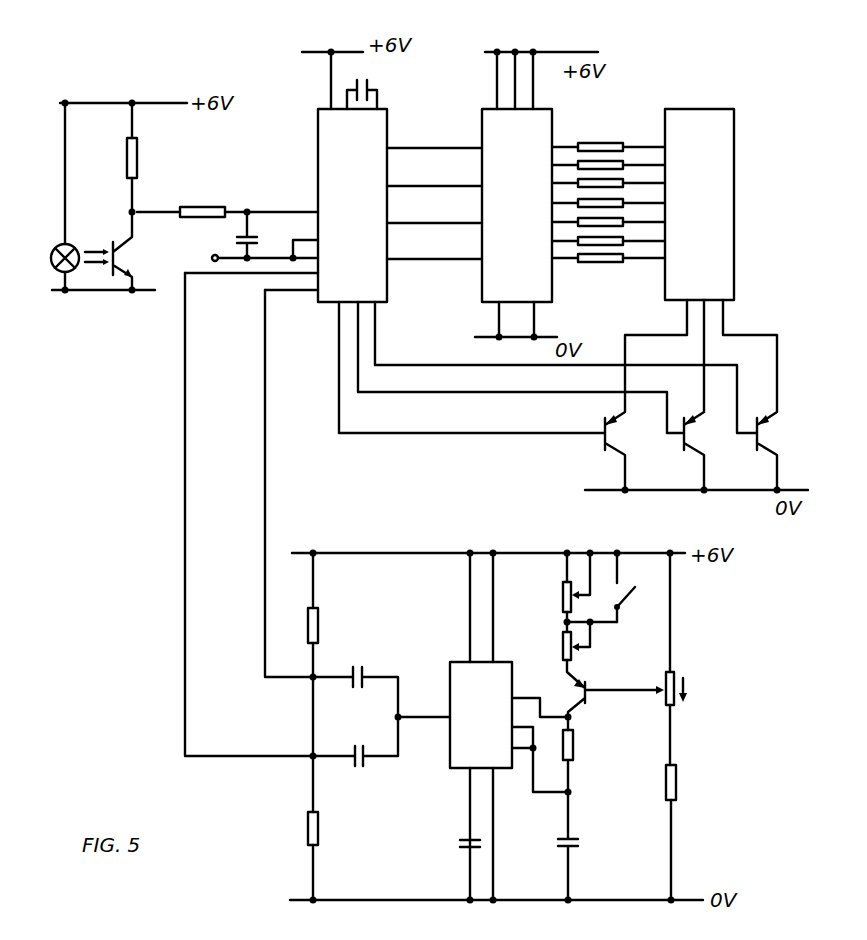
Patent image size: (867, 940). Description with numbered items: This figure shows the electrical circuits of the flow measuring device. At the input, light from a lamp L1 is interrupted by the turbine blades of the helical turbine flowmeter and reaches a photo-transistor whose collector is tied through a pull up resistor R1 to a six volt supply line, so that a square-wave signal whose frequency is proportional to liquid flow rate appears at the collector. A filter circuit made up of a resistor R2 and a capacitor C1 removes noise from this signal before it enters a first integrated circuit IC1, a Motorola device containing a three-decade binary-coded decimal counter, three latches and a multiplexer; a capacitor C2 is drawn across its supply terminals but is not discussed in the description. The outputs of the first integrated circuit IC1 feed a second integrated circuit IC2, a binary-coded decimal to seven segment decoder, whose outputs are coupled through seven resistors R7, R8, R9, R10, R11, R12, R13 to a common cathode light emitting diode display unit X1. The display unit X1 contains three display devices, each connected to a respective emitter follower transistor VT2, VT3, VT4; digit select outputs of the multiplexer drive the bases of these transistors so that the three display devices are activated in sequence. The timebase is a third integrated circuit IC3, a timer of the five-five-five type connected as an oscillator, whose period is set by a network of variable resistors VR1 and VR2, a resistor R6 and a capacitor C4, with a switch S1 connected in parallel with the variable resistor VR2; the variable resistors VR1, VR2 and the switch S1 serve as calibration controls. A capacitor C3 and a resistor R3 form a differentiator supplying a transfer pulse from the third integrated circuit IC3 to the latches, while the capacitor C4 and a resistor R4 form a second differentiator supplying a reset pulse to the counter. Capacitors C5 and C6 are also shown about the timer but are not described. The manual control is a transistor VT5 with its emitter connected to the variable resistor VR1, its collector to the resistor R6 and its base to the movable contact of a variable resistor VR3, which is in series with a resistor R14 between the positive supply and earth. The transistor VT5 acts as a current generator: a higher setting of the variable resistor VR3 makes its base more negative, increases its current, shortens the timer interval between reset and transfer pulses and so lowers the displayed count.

The lamp L1 is at (80, 196).
The pull up resistor R1 is at (149, 157).
The resistor R2 is at (227, 197).
The capacitor C1 is at (232, 235).
The capacitor C2 is at (374, 86).
The first integrated circuit IC1 is at (352, 205).
The second integrated circuit IC2 is at (517, 205).
The common cathode light emitting diode display unit X1 is at (699, 204).
The resistor R7 is at (608, 133).
The resistor R8 is at (624, 164).
The resistor R9 is at (624, 183).
The resistor R10 is at (578, 217).
The resistor R11 is at (625, 244).
The resistor R12 is at (625, 227).
The resistor R13 is at (600, 262).
The emitter follower transistor VT2 is at (646, 395).
The emitter follower transistor VT3 is at (709, 395).
The emitter follower transistor VT4 is at (763, 395).
The resistor R3 is at (330, 615).
The resistor R4 is at (295, 828).
The capacitor C3 is at (355, 680).
The capacitor C4 is at (355, 760).
The third integrated circuit IC3 is at (481, 715).
The capacitor C5 is at (450, 843).
The capacitor C6 is at (586, 846).
The resistor R6 is at (586, 754).
The transistor VT5 is at (615, 688).
The variable resistor VR1 is at (553, 641).
The variable resistor VR2 is at (553, 587).
The variable resistor VR3 is at (694, 659).
The switch S1 is at (633, 587).
The resistor R14 is at (695, 832).